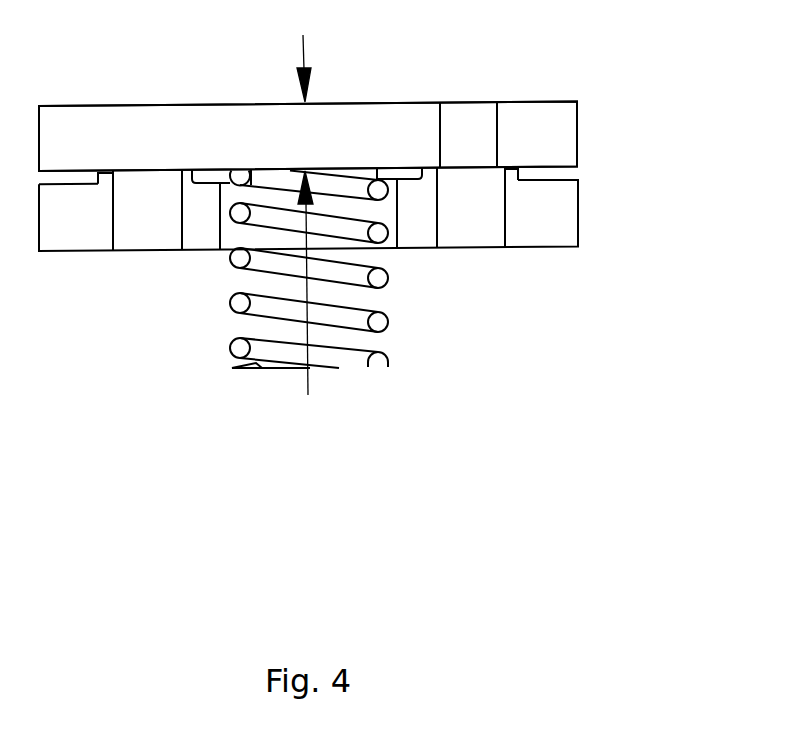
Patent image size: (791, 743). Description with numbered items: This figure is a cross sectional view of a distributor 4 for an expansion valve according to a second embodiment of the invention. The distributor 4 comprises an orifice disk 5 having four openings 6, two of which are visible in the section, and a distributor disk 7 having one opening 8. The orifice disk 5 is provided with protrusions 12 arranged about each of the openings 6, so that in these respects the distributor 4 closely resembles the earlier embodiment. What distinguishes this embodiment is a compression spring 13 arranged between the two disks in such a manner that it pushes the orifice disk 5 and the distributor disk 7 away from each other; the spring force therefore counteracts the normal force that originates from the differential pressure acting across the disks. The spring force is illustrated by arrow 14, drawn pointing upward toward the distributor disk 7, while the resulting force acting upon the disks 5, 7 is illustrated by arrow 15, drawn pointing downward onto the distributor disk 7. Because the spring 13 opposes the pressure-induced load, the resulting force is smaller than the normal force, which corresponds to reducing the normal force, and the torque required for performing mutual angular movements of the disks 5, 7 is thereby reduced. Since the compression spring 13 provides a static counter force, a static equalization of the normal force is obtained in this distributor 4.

The distributor 4 is at (590, 169).
The orifice disk 5 is at (547, 220).
The openings 6 is at (146, 223).
The distributor disk 7 is at (103, 128).
The opening 8 is at (468, 123).
The protrusions 12 is at (108, 173).
The compression spring 13 is at (338, 315).
The arrow 14 is at (307, 378).
The arrow 15 is at (305, 53).